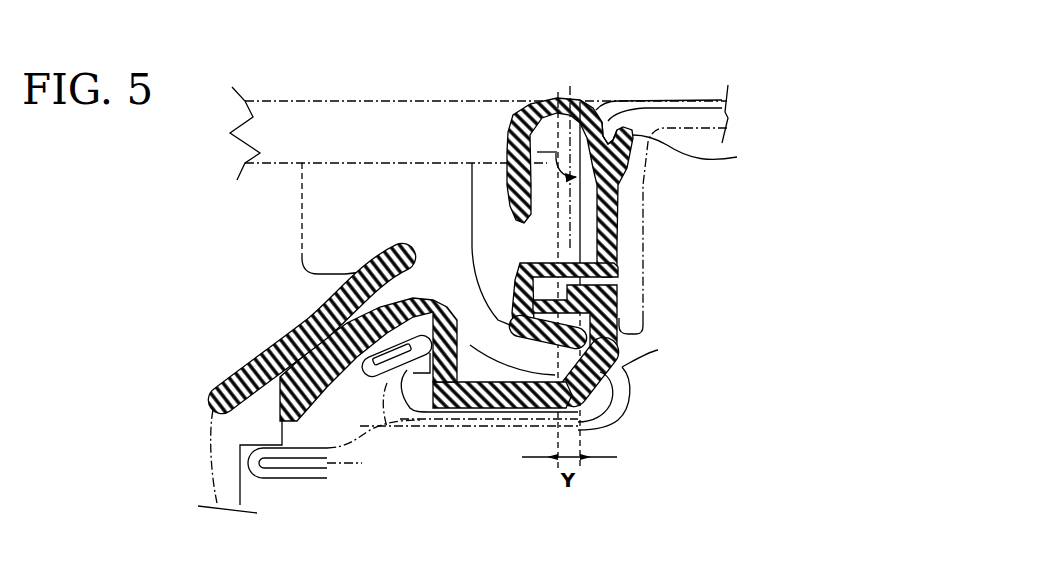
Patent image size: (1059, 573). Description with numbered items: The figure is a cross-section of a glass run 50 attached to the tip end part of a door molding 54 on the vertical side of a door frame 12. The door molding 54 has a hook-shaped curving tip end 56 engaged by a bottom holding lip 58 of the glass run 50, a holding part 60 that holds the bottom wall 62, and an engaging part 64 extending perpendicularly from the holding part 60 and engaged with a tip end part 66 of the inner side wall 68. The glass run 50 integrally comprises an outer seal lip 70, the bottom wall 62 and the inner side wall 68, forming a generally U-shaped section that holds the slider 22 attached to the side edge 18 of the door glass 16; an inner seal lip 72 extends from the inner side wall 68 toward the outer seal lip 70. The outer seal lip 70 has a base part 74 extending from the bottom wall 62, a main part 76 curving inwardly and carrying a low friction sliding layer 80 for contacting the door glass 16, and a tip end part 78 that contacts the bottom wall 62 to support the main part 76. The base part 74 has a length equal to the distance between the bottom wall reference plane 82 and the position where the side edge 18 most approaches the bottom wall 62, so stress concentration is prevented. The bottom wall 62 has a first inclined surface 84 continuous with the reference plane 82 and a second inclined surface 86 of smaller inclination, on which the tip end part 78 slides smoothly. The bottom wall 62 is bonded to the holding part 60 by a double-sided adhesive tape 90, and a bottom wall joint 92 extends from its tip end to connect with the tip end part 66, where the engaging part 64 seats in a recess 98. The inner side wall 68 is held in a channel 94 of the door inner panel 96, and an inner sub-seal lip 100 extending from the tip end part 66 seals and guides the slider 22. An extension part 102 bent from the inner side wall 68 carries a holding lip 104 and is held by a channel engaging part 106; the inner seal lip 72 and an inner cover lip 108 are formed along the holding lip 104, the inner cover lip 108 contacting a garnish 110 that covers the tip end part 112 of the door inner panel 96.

The door frame 12 is at (620, 427).
The door glass 16 is at (252, 101).
The side edge 18 is at (607, 92).
The slider 22 is at (310, 190).
The glass run 50 is at (603, 103).
The door molding 54 is at (727, 86).
The curving tip end 56 is at (714, 88).
The bottom holding lip 58 is at (700, 153).
The holding part 60 is at (633, 258).
The bottom wall 62 is at (630, 193).
The engaging part 64 is at (513, 277).
The tip end part 66 is at (630, 330).
The inner side wall 68 is at (522, 416).
The outer seal lip 70 is at (513, 108).
The inner seal lip 72 is at (313, 279).
The base part 74 is at (578, 104).
The main part 76 is at (506, 136).
The tip end part 78 is at (512, 275).
The low friction sliding layer 80 is at (507, 153).
The bottom wall reference plane 82 is at (556, 152).
The first inclined surface 84 is at (633, 168).
The second inclined surface 86 is at (608, 279).
The double-sided adhesive tape 90 is at (618, 227).
The bottom wall joint 92 is at (548, 265).
The channel 94 is at (528, 412).
The door inner panel 96 is at (416, 418).
The recess 98 is at (507, 303).
The inner sub-seal lip 100 is at (622, 367).
The extension part 102 is at (460, 425).
The holding lip 104 is at (300, 316).
The channel engaging part 106 is at (392, 400).
The inner cover lip 108 is at (240, 378).
The garnish 110 is at (213, 410).
The tip end part 112 is at (240, 447).